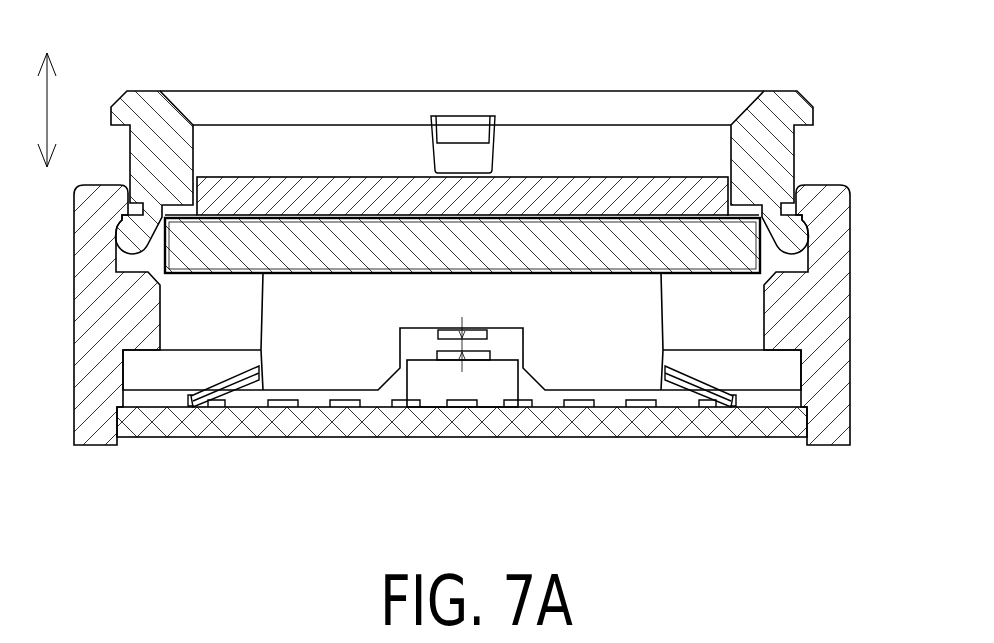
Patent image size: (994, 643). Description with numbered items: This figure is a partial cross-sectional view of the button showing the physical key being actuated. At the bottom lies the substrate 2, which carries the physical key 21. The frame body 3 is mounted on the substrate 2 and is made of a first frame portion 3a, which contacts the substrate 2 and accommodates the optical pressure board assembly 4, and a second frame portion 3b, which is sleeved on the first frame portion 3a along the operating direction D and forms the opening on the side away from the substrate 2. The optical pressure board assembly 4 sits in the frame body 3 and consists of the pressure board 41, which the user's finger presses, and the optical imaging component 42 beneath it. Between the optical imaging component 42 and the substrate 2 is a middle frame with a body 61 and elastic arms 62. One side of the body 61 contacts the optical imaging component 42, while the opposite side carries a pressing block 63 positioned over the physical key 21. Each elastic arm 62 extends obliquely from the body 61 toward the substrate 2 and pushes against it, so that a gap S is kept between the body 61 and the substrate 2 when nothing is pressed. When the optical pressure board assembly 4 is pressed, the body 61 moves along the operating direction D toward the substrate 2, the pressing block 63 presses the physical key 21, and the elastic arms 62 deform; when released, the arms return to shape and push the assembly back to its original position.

The substrate 2 is at (293, 424).
The physical key 21 is at (496, 390).
The frame body 3 is at (505, 268).
The first frame portion 3a is at (485, 299).
The second frame portion 3b is at (813, 113).
The optical pressure board assembly 4 is at (462, 137).
The pressure board 41 is at (274, 196).
The optical imaging component 42 is at (322, 250).
The body 61 is at (610, 365).
The elastic arm 62 is at (685, 382).
The pressing block 63 is at (437, 336).
The gap S is at (463, 342).
The operating direction D is at (36, 110).